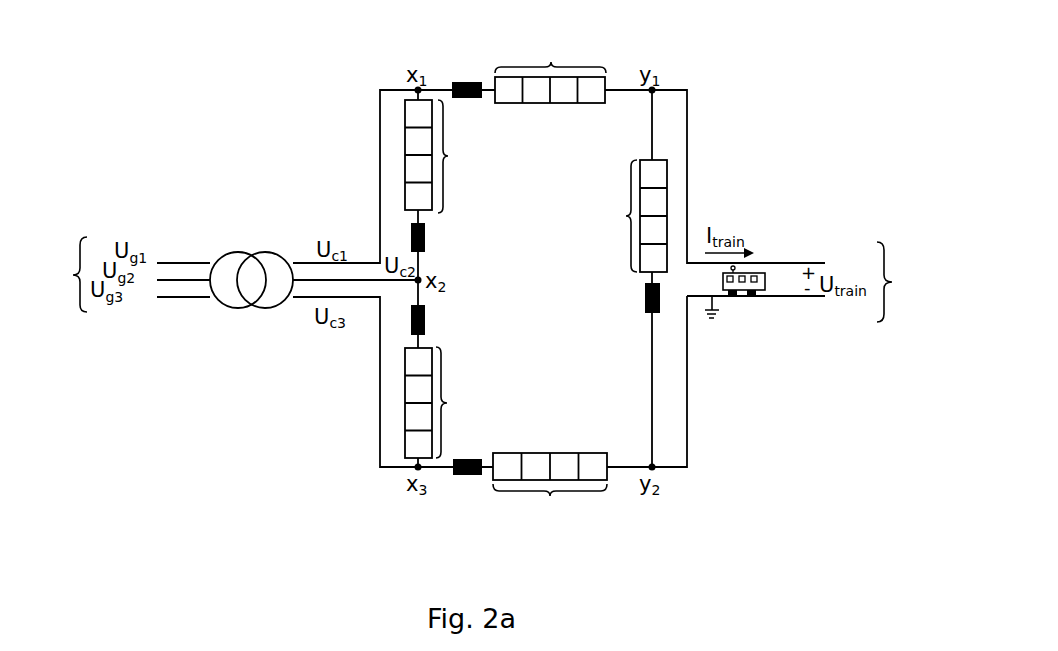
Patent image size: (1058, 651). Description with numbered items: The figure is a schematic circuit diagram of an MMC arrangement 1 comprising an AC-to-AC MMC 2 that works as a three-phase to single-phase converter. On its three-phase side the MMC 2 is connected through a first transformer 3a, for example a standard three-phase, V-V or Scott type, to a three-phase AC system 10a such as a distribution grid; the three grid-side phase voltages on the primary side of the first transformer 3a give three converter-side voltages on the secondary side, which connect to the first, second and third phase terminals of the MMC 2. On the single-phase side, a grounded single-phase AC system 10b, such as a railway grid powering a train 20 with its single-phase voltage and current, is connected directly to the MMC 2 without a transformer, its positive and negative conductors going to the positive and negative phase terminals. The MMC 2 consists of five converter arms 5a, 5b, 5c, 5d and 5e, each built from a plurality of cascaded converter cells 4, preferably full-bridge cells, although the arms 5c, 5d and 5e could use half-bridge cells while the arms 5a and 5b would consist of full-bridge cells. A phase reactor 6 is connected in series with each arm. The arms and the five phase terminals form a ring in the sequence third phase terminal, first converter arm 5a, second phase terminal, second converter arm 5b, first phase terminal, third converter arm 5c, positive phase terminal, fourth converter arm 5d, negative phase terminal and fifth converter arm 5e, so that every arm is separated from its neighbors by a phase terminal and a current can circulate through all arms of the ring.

The MMC arrangement 1 is at (809, 72).
The AC-to-AC MMC 2 is at (711, 129).
The first transformer 3a is at (283, 318).
The converter cell 4 is at (415, 168).
The first converter arm 5a is at (440, 402).
The second converter arm 5b is at (441, 156).
The third converter arm 5c is at (550, 70).
The fourth converter arm 5d is at (629, 216).
The fifth converter arm 5e is at (550, 488).
The phase reactor 6 is at (477, 99).
The three-phase AC system 10a is at (56, 274).
The single-phase AC system 10b is at (906, 282).
The train 20 is at (753, 297).